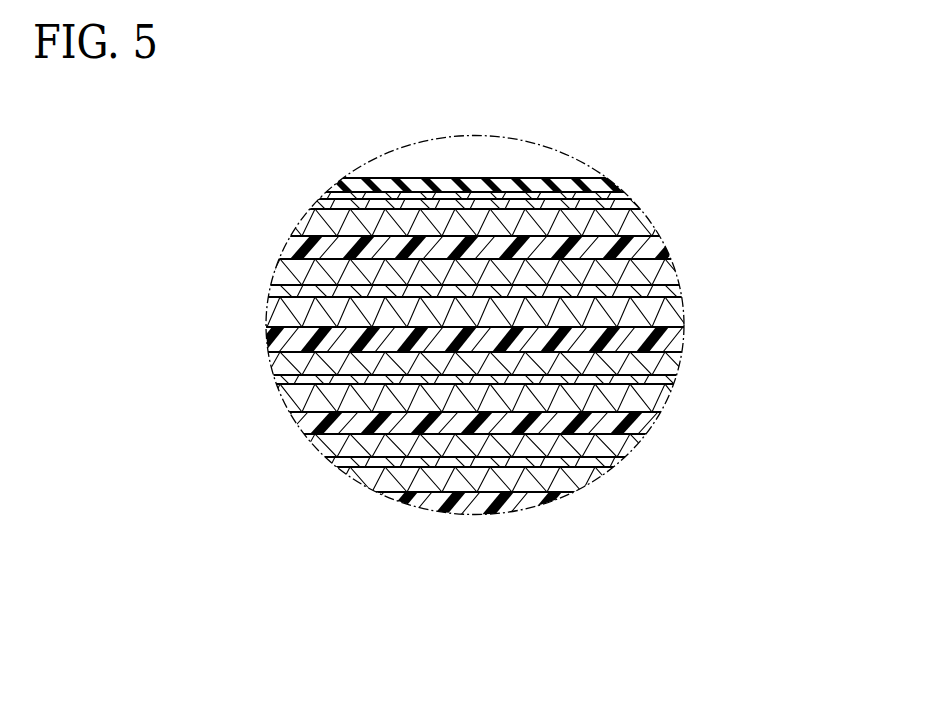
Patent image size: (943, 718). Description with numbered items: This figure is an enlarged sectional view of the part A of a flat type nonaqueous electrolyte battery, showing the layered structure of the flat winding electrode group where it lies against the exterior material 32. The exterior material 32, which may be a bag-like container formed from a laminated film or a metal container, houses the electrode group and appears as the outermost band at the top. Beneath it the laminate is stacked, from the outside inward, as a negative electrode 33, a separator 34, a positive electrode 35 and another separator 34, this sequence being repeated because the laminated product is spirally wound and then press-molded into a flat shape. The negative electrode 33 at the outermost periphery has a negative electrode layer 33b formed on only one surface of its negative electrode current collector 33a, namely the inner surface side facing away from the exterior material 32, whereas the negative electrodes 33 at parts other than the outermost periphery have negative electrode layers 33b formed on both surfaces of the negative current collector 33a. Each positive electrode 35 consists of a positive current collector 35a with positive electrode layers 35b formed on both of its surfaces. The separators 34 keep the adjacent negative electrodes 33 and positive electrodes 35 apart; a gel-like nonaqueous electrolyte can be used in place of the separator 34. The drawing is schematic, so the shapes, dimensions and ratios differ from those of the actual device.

The part A is at (408, 161).
The exterior material 32 is at (610, 186).
The negative electrode 33 is at (757, 153).
The negative electrode current collector 33a is at (625, 205).
The negative electrode layer 33b is at (633, 226).
The separator 34 is at (292, 233).
The positive electrode 35 is at (782, 235).
The positive current collector 35a is at (667, 293).
The positive electrode layer 35b is at (665, 274).